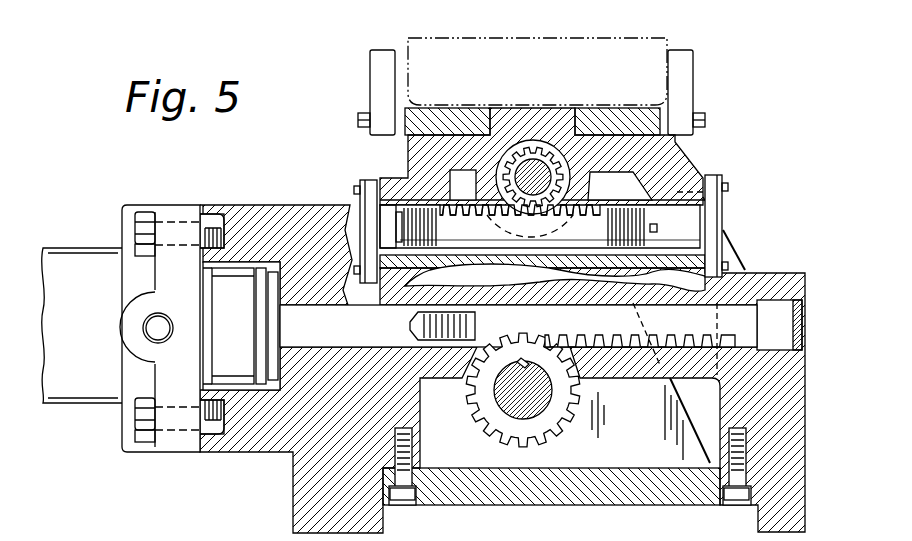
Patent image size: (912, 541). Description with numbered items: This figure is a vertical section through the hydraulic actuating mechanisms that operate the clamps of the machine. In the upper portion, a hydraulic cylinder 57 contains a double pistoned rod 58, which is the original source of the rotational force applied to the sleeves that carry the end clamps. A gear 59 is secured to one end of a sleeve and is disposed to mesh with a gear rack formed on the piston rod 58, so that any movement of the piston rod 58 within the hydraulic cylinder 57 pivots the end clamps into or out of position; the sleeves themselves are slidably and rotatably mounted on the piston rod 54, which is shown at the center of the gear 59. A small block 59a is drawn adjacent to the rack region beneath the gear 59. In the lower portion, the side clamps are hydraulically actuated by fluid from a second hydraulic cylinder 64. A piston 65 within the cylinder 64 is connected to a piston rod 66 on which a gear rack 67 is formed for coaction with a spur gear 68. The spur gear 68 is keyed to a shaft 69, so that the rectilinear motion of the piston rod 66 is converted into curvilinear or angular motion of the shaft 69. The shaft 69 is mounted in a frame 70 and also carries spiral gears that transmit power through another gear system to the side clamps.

The piston rod 54 is at (546, 175).
The hydraulic cylinder 57 is at (699, 196).
The double pistoned rod 58 is at (598, 228).
The gear 59 is at (527, 148).
The stop block 59a is at (486, 212).
The hydraulic cylinder 64 is at (79, 252).
The piston 65 is at (240, 278).
The piston rod 66 is at (305, 322).
The gear rack 67 is at (690, 340).
The spur gear 68 is at (582, 388).
The shaft 69 is at (508, 410).
The frame 70 is at (657, 428).